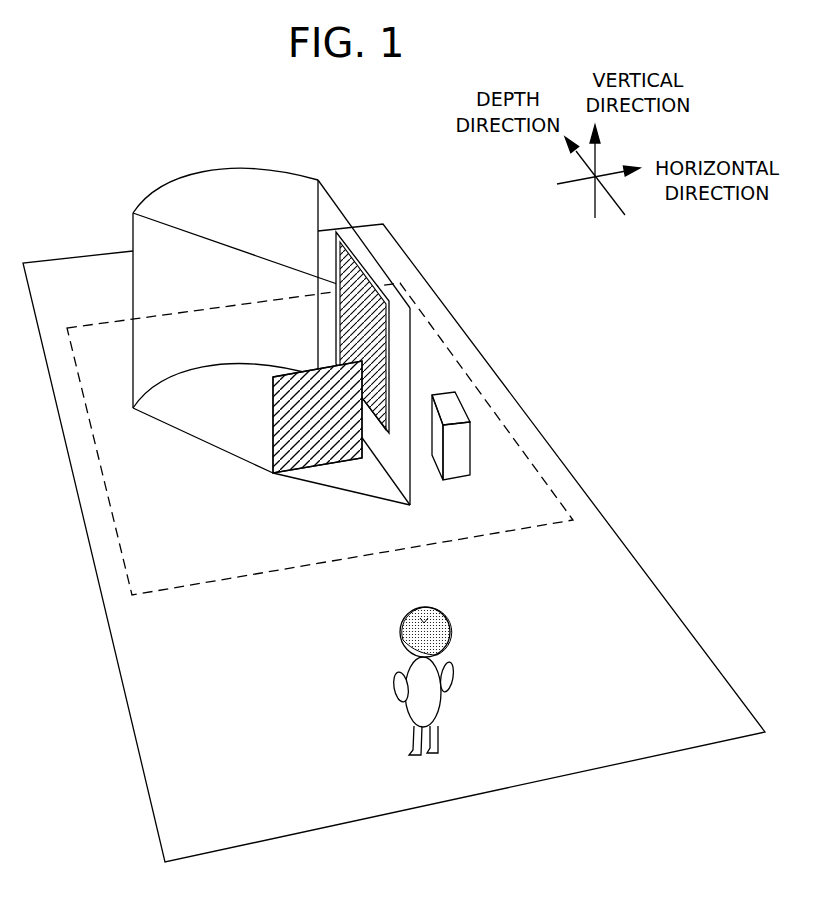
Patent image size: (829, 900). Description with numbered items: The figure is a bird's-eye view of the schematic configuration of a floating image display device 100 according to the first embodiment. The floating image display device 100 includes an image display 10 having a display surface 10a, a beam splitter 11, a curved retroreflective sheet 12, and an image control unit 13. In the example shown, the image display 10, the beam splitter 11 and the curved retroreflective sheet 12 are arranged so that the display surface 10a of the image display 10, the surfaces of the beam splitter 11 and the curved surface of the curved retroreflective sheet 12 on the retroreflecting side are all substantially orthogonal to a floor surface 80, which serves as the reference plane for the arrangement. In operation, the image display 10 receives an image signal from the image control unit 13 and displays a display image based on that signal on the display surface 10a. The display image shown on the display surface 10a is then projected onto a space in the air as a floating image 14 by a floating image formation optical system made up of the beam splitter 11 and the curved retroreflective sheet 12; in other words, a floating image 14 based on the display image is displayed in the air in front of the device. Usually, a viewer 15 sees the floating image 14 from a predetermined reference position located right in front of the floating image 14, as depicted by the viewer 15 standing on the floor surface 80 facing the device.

The floating image display device 100 is at (83, 391).
The floor surface 80 is at (648, 618).
The beam splitter 11 is at (148, 279).
The curved retroreflective sheet 12 is at (203, 207).
The image display 10 is at (334, 228).
The display surface 10a is at (355, 243).
The image control unit 13 is at (457, 452).
The floating image 14 is at (318, 423).
The viewer 15 is at (427, 700).